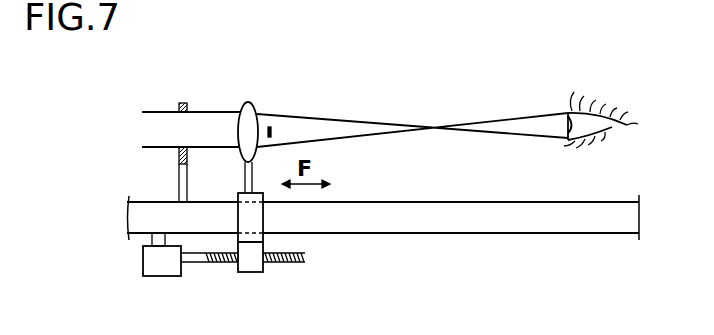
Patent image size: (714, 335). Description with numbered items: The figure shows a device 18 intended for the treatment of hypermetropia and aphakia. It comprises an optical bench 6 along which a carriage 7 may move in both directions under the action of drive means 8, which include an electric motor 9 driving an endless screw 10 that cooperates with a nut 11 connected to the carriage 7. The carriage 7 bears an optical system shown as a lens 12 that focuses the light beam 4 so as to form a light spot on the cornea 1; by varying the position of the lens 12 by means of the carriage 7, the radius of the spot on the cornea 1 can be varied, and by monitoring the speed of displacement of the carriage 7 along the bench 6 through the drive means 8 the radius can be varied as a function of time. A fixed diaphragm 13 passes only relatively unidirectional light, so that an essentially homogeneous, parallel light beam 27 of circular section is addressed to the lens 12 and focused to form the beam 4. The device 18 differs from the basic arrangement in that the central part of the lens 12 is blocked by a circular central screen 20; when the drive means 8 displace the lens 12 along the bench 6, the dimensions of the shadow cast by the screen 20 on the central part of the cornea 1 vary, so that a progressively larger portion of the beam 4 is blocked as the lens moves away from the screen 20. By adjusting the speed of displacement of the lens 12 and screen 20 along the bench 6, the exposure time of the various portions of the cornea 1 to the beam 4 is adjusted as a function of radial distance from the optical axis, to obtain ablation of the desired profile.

The cornea 1 is at (570, 112).
The light beam 4 is at (357, 133).
The optical bench 6 is at (586, 220).
The carriage 7 is at (245, 212).
The drive means 8 is at (227, 265).
The electric motor 9 is at (151, 270).
The endless screw 10 is at (303, 266).
The nut 11 is at (257, 266).
The lens 12 is at (256, 106).
The fixed diaphragm 13 is at (177, 105).
The device 18 is at (344, 112).
The circular central screen 20 is at (272, 130).
The parallel light beam 27 is at (212, 118).